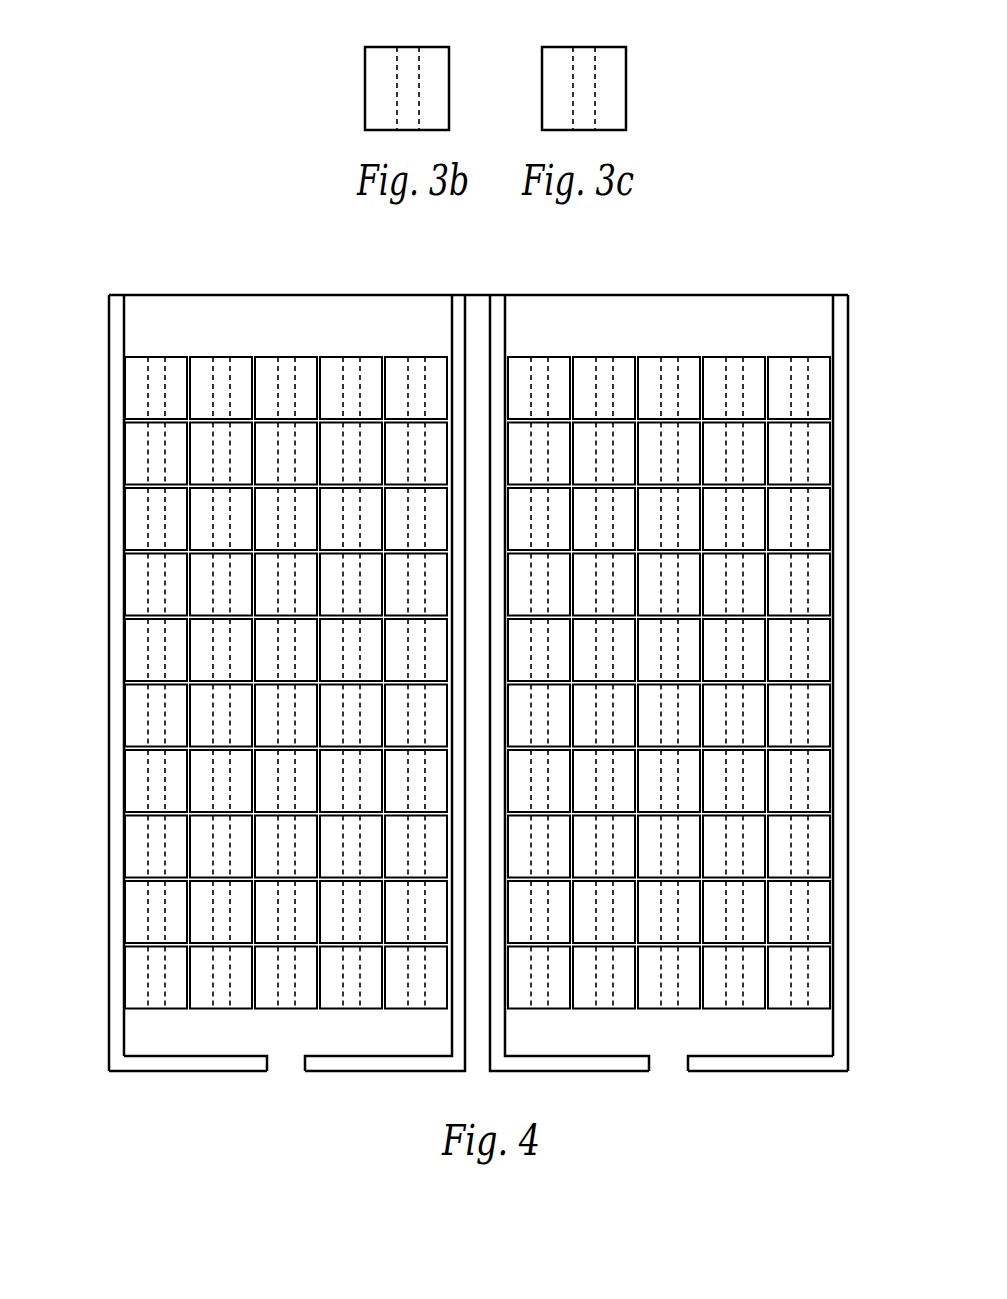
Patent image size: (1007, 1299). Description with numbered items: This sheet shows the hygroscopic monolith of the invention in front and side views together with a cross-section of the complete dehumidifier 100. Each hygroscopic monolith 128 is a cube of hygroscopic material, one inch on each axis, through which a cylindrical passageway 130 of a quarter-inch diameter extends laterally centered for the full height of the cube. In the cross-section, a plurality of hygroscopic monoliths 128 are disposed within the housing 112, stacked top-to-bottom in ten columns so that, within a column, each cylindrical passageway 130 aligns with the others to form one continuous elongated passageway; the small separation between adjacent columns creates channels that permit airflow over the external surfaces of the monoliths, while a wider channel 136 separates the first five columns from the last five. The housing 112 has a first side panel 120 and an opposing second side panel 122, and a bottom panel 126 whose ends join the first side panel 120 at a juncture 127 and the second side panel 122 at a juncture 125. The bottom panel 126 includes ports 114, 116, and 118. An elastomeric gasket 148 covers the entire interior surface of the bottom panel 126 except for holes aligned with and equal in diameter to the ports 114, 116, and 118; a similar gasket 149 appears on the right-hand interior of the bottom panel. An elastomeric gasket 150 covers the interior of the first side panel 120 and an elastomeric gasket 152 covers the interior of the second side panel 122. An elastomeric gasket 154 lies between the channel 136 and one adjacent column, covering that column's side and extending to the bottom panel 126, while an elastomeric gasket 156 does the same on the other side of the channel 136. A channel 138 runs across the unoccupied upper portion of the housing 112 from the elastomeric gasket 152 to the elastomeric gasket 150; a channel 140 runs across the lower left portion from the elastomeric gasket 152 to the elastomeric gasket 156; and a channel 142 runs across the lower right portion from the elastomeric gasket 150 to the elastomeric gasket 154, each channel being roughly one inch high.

In FIG. 4, the dehumidifier 100 is at (130, 266).
In FIG. 4, the housing 112 is at (90, 980).
In FIG. 4, the port 114 is at (287, 1068).
In FIG. 4, the port 116 is at (477, 990).
In FIG. 4, the port 118 is at (667, 1066).
In FIG. 4, the first side panel 120 is at (849, 790).
In FIG. 4, the second side panel 122 is at (103, 812).
In FIG. 4, the juncture 125 is at (108, 1071).
In FIG. 4, the bottom panel 126 is at (155, 1071).
In FIG. 4, the juncture 127 is at (848, 1071).
In FIG. 3B, the hygroscopic monolith 128 is at (447, 98).
In FIG. 3C, the hygroscopic monolith 128 is at (625, 98).
In FIG. 4, the hygroscopic monolith 128 is at (134, 590).
In FIG. 3B, the cylindrical passageway 130 is at (403, 58).
In FIG. 3C, the cylindrical passageway 130 is at (581, 58).
In FIG. 4, the cylindrical passageway 130 is at (350, 368).
In FIG. 4, the channel 136 is at (478, 383).
In FIG. 4, the channel 138 is at (299, 336).
In FIG. 4, the channel 140 is at (321, 1045).
In FIG. 4, the channel 142 is at (669, 1045).
In FIG. 4, the elastomeric gasket 148 is at (212, 1055).
In FIG. 4, the inner bottom edge 149 is at (717, 1056).
In FIG. 4, the elastomeric gasket 150 is at (833, 327).
In FIG. 4, the elastomeric gasket 152 is at (124, 328).
In FIG. 4, the elastomeric gasket 154 is at (483, 1062).
In FIG. 4, the elastomeric gasket 156 is at (470, 1062).